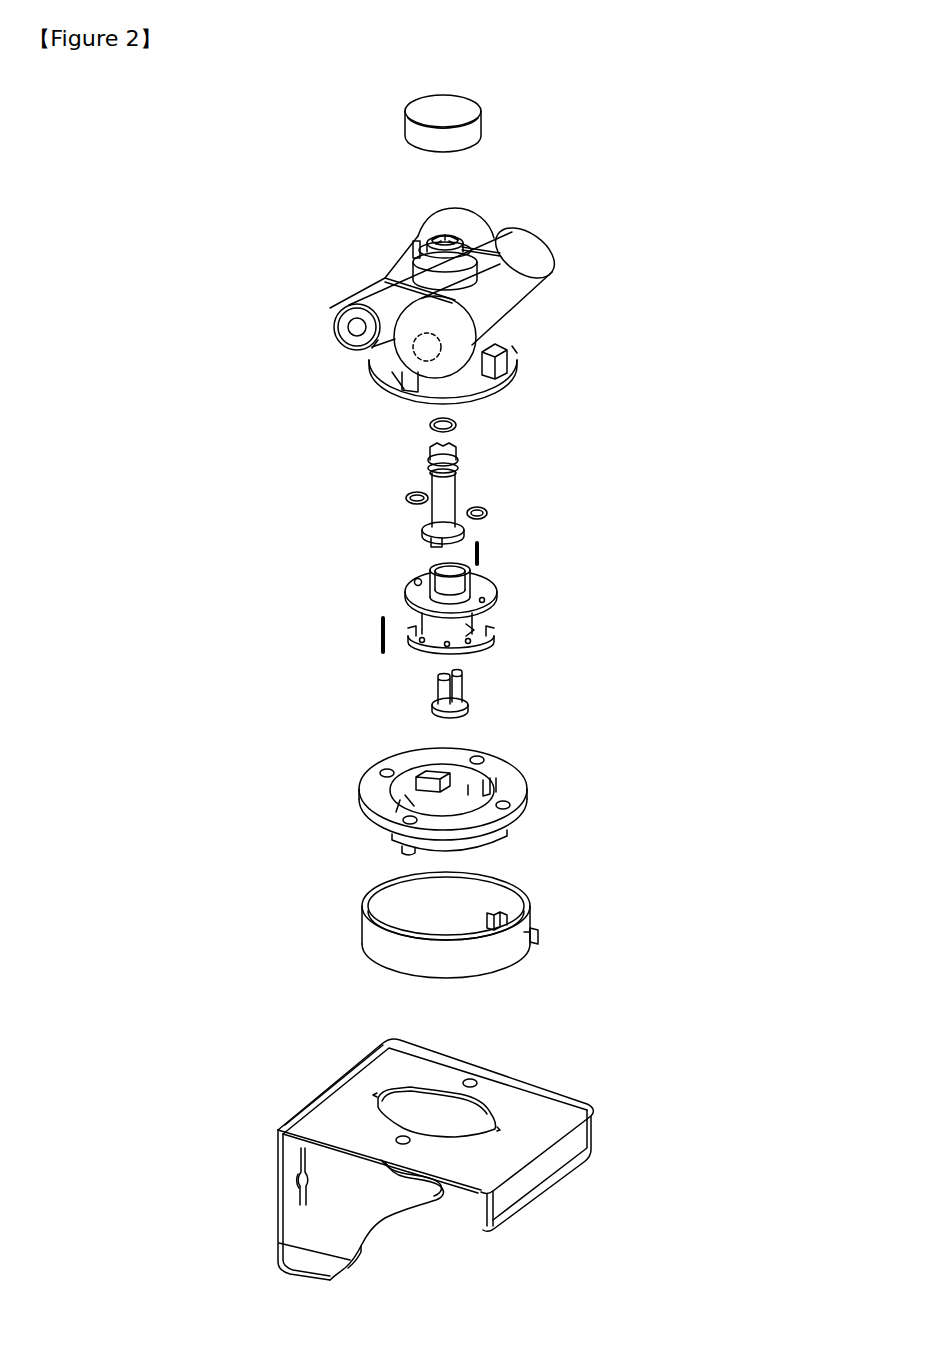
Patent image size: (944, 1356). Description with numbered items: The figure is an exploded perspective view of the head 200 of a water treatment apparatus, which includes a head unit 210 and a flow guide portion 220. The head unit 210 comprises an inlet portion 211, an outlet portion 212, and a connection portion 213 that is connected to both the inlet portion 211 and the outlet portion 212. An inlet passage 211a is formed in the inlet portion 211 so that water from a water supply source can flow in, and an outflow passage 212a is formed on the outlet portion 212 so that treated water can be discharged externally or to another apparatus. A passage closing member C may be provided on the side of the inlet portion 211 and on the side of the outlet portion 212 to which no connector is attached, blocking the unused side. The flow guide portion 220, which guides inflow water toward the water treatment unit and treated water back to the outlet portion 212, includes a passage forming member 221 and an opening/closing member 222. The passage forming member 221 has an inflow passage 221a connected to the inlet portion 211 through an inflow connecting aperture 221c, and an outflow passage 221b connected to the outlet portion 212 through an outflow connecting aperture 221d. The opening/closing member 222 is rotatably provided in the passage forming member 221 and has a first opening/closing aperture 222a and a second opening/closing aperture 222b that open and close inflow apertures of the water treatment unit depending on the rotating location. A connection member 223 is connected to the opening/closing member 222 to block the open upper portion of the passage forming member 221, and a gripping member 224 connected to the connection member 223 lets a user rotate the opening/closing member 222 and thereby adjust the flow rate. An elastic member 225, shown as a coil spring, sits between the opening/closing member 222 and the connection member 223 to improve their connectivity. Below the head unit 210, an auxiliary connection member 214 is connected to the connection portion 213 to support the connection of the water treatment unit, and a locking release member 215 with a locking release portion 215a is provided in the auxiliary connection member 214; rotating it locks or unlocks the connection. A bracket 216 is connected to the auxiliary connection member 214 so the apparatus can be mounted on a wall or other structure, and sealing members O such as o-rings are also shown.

The head 200 is at (271, 129).
The head unit 210 is at (456, 303).
The inlet portion 211 is at (400, 268).
The inlet passage 211a is at (360, 334).
The outlet portion 212 is at (495, 302).
The outflow passage 212a is at (363, 393).
The connection portion 213 is at (490, 337).
The auxiliary connection member 214 is at (512, 782).
The locking release member 215 is at (523, 897).
The locking release portion 215a is at (536, 936).
The bracket 216 is at (497, 1078).
The flow guide portion 220 is at (364, 608).
The passage forming member 221 is at (493, 575).
The inflow passage 221a is at (412, 582).
The outflow passage 221b is at (487, 633).
The inflow connecting aperture 221c is at (418, 577).
The outflow connecting aperture 221d is at (483, 592).
The opening/closing member 222 is at (457, 688).
The first opening/closing aperture 222a is at (463, 712).
The second opening/closing aperture 222b is at (437, 702).
The connection member 223 is at (448, 522).
The gripping member 224 is at (452, 146).
The elastic member 225 is at (378, 634).
The passage closing member C is at (445, 218).
The sealing member O is at (430, 496).